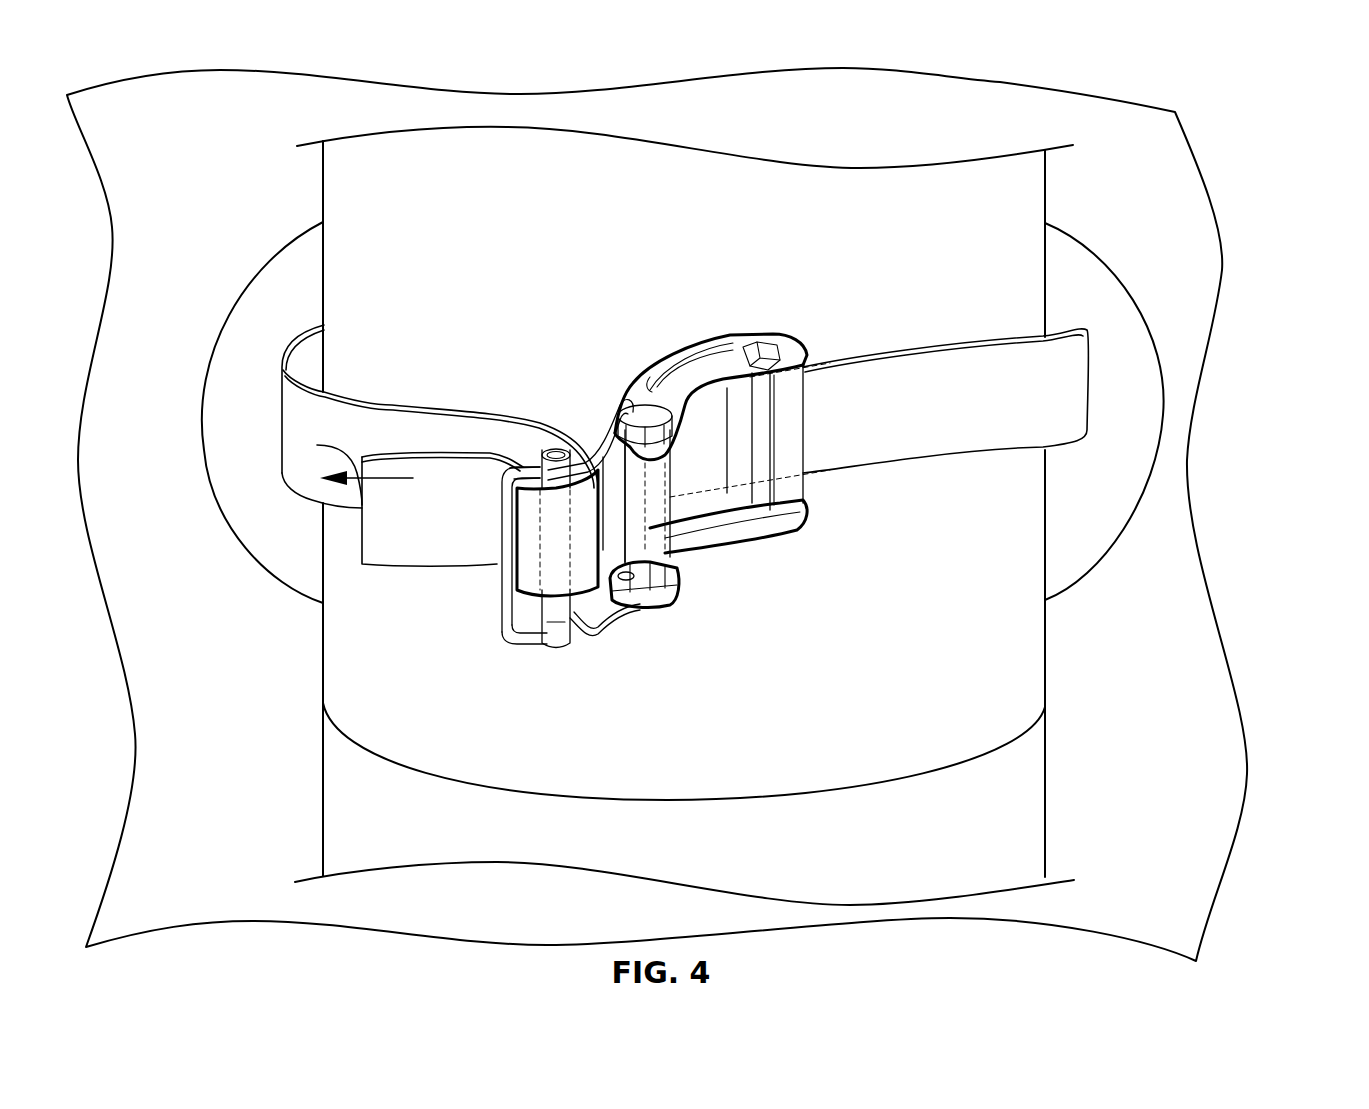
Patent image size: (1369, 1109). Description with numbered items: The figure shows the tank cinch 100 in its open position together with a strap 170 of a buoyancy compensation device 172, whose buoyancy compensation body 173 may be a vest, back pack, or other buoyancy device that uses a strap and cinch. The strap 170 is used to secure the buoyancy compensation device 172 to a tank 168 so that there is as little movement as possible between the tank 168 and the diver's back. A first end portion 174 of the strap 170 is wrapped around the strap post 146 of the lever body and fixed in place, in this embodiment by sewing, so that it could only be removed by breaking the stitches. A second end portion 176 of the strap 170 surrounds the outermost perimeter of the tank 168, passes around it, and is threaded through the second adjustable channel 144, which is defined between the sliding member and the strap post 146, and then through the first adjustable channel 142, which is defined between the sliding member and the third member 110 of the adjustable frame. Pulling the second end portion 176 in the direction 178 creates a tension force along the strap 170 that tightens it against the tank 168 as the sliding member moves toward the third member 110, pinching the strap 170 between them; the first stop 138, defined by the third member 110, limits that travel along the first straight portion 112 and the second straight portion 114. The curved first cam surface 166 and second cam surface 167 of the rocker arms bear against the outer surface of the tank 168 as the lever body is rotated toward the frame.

The tank cinch 100 is at (540, 277).
The third member 110 is at (508, 500).
The first straight portion 112 is at (538, 463).
The second straight portion 114 is at (530, 643).
The first stop 138 is at (510, 473).
The first adjustable channel 142 is at (515, 627).
The second adjustable channel 144 is at (600, 620).
The strap post 146 is at (607, 430).
The first cam surface 166 is at (662, 435).
The second cam surface 167 is at (675, 600).
The tank 168 is at (1028, 647).
The strap 170 is at (354, 410).
The buoyancy compensation device 172 is at (1205, 110).
The buoyancy compensation body 173 is at (1162, 305).
The first end portion 174 is at (687, 487).
The second end portion 176 is at (553, 570).
The direction 178 is at (317, 445).